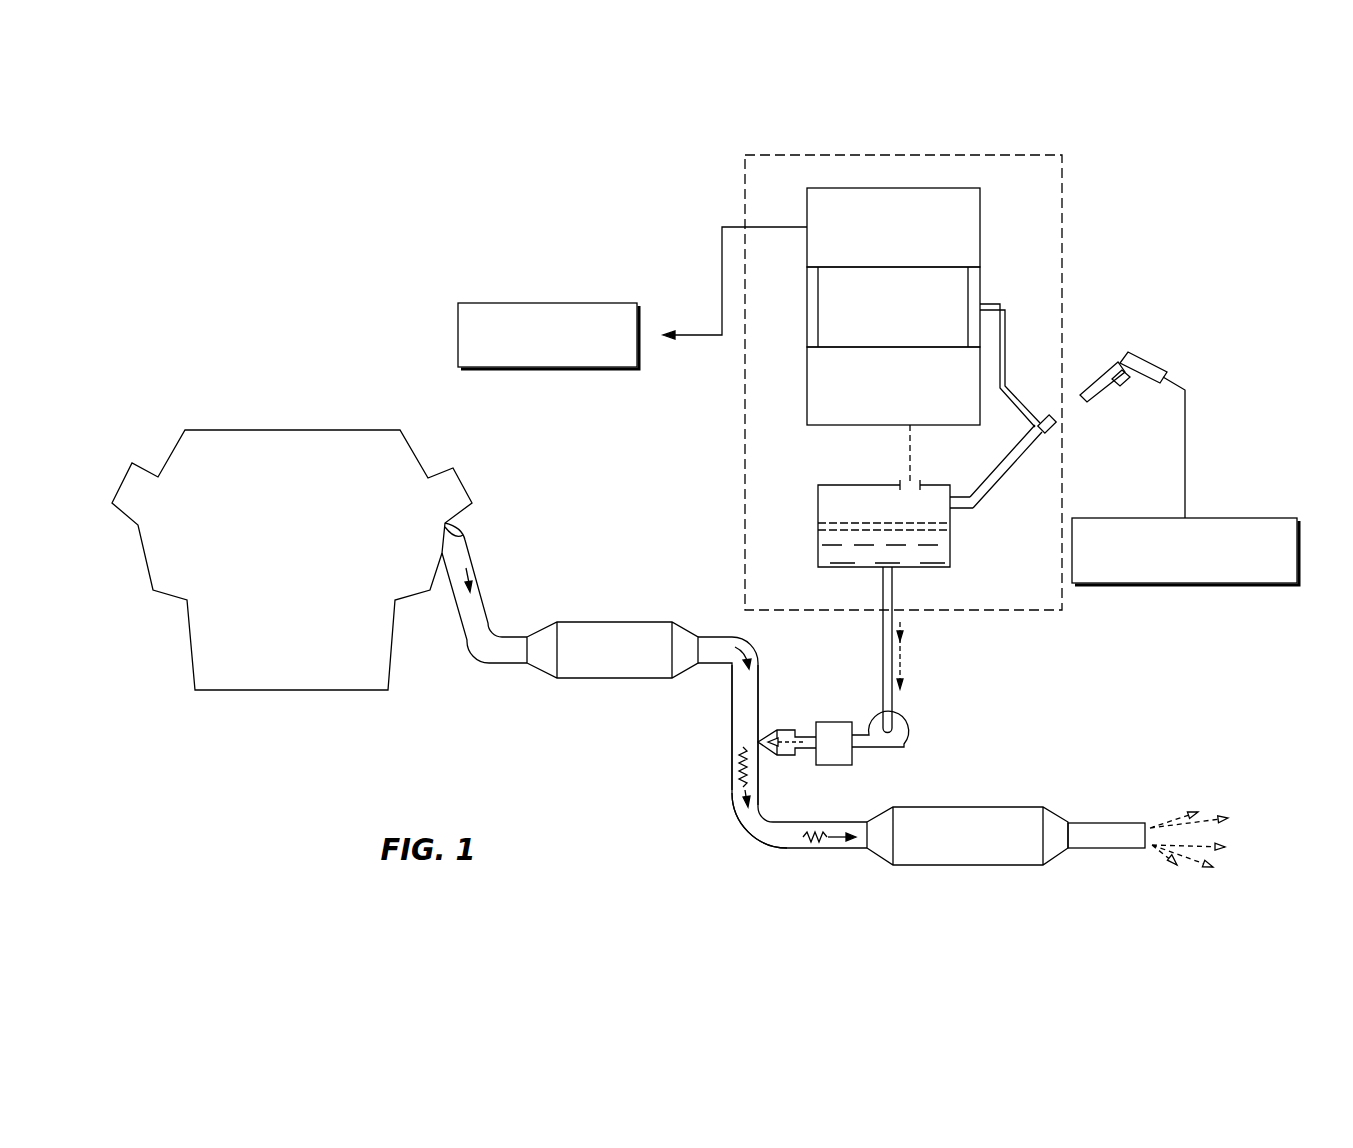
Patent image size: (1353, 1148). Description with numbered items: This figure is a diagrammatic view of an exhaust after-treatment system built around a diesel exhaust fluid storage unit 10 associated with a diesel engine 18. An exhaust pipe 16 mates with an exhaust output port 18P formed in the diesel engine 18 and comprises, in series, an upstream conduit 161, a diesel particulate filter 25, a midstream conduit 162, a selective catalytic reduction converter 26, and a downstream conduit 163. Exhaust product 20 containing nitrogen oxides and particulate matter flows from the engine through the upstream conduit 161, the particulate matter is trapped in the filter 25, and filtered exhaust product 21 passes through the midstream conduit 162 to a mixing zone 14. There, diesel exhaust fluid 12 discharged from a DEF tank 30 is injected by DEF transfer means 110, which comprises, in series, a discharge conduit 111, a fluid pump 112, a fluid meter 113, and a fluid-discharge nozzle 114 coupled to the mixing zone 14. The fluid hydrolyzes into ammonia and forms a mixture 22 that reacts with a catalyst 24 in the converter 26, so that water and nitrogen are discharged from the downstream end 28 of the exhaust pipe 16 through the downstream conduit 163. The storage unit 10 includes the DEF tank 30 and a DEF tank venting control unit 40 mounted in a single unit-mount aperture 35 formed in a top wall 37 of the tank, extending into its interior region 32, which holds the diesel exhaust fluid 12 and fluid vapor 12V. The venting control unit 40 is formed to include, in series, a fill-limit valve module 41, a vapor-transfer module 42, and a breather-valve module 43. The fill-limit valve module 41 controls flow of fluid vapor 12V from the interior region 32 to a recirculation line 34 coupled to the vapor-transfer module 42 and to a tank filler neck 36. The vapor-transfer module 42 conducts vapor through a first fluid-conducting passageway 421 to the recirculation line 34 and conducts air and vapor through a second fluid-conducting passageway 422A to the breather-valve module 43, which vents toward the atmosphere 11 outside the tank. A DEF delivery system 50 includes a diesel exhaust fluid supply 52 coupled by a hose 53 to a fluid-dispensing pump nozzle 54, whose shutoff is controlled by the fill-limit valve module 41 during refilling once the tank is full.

The diesel exhaust fluid (DEF) storage unit 10 is at (1063, 253).
The atmosphere 11 is at (500, 302).
The diesel exhaust fluid 12 is at (907, 660).
The fluid vapor 12V is at (940, 455).
The mixing zone 14 is at (735, 740).
The exhaust pipe 16 is at (762, 850).
The diesel engine 18 is at (277, 430).
The exhaust output port 18P is at (445, 540).
The exhaust product 20 is at (483, 587).
The filtered exhaust product 21 is at (732, 637).
The mixture 22 is at (737, 790).
The catalyst 24 is at (961, 868).
The diesel particulate filter 25 is at (602, 622).
The selective catalytic reduction (SCR) converter 26 is at (980, 807).
The downstream end 28 is at (1152, 822).
The DEF tank 30 is at (964, 555).
The interior region 32 is at (828, 495).
The recirculation line 34 is at (1003, 357).
The unit-mount aperture 35 is at (901, 470).
The tank filler neck 36 is at (1008, 475).
The top wall 37 is at (865, 483).
The DEF tank venting control unit 40 is at (982, 247).
The fill-limit valve module 41 is at (807, 387).
The vapor-transfer module 42 is at (807, 308).
The breather-valve module 43 is at (807, 247).
The diesel exhaust fluid (DEF) delivery system 50 is at (1215, 367).
The diesel exhaust fluid supply 52 is at (1227, 518).
The hose 53 is at (1185, 445).
The fluid-dispensing pump nozzle 54 is at (1140, 357).
The DEF transfer means 110 is at (924, 705).
The discharge conduit 111 is at (883, 632).
The fluid pump 112 is at (897, 732).
The fluid meter 113 is at (837, 753).
The fluid-discharge nozzle 114 is at (780, 753).
The upstream conduit 161 is at (481, 606).
The midstream conduit 162 is at (732, 712).
The downstream conduit 163 is at (1077, 853).
The first fluid-conducting passageway 421 is at (977, 305).
The second fluid-conducting passageway 422A is at (807, 292).